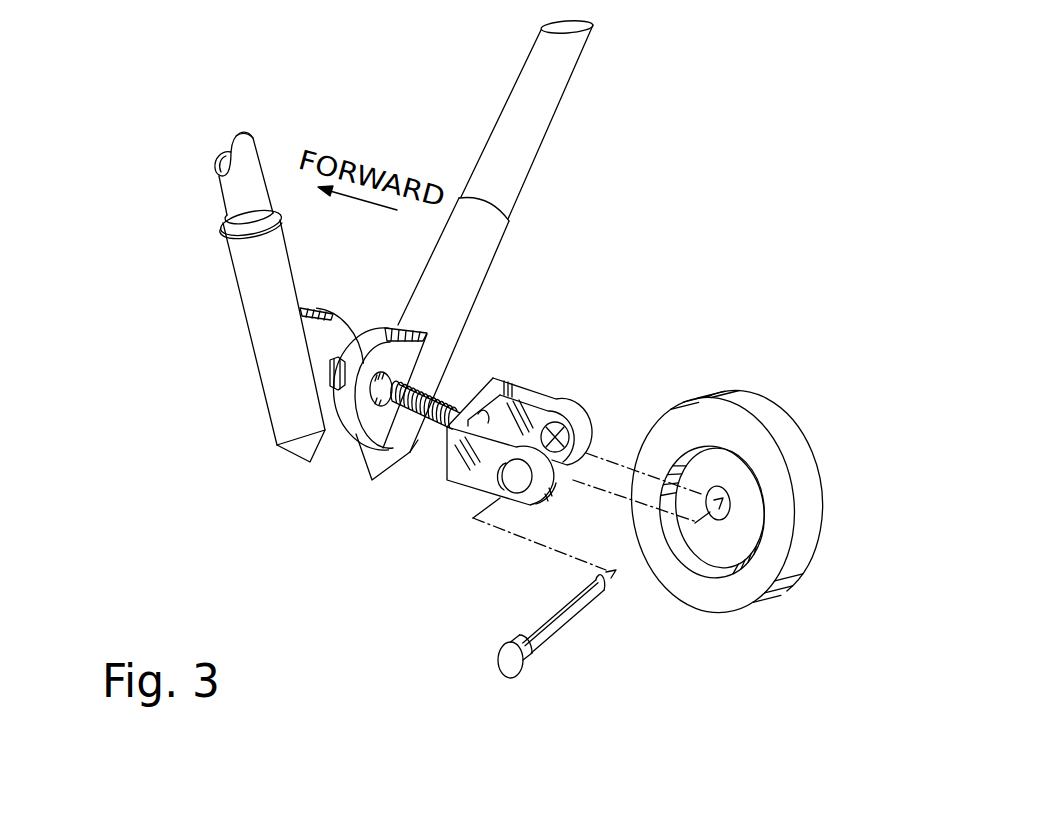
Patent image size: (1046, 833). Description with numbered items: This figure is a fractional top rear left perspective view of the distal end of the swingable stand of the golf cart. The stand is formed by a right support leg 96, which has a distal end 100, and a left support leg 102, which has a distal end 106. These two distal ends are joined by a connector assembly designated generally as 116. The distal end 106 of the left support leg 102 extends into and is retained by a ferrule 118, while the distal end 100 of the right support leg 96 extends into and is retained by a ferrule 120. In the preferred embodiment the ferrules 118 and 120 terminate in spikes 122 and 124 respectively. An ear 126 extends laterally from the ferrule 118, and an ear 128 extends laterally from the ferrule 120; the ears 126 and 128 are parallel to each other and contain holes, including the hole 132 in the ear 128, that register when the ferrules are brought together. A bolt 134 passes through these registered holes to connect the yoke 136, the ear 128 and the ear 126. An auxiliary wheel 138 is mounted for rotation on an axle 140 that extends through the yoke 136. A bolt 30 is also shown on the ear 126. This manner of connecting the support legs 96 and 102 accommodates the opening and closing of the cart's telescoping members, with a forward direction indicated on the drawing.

The bolt 30 is at (322, 368).
The right support leg 96 is at (562, 53).
The distal end of the right support leg 100 is at (508, 181).
The left support leg 102 is at (256, 136).
The distal end of the left support leg 106 is at (240, 208).
The connector assembly 116 is at (193, 420).
The ferrule 118 is at (247, 300).
The ferrule 120 is at (483, 247).
The spike 122 is at (305, 462).
The spike 124 is at (365, 462).
The ear 126 is at (330, 342).
The ear 128 is at (407, 340).
The hole 132 is at (413, 373).
The bolt 134 is at (409, 455).
The yoke 136 is at (557, 385).
The auxiliary wheel 138 is at (778, 440).
The axle 140 is at (535, 625).